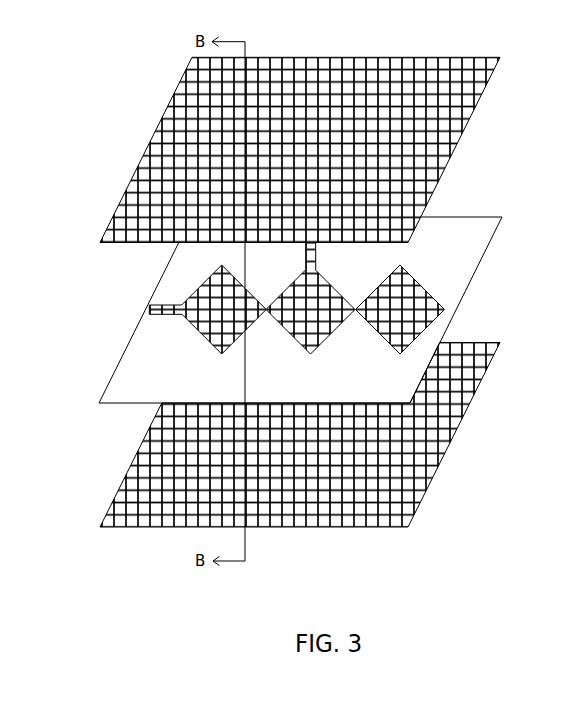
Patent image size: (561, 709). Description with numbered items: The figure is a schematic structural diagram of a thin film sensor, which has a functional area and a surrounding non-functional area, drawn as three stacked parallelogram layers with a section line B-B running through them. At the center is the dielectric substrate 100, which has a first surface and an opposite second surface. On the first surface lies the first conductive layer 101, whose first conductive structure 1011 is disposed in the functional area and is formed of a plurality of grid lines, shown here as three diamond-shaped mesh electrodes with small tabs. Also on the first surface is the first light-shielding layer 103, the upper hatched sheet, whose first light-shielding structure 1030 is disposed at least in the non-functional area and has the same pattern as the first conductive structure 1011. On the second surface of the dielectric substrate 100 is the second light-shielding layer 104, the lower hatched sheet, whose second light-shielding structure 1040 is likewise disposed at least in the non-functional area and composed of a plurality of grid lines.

The dielectric substrate 100 is at (478, 216).
The first conductive layer 101 is at (309, 293).
The first conductive structure 1011 is at (420, 285).
The first light-shielding layer 103 is at (321, 149).
The first light-shielding structure 1030 is at (473, 108).
The second light-shielding layer 104 is at (310, 435).
The second light-shielding structure 1040 is at (455, 435).